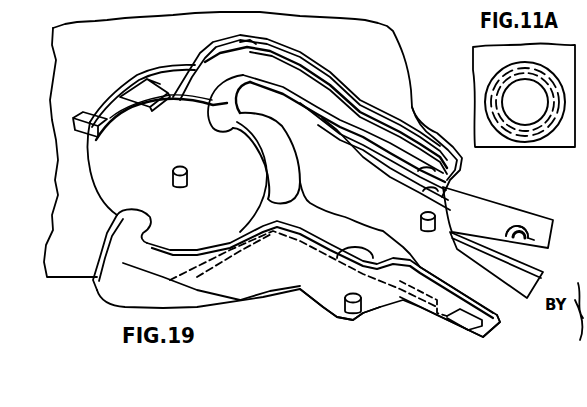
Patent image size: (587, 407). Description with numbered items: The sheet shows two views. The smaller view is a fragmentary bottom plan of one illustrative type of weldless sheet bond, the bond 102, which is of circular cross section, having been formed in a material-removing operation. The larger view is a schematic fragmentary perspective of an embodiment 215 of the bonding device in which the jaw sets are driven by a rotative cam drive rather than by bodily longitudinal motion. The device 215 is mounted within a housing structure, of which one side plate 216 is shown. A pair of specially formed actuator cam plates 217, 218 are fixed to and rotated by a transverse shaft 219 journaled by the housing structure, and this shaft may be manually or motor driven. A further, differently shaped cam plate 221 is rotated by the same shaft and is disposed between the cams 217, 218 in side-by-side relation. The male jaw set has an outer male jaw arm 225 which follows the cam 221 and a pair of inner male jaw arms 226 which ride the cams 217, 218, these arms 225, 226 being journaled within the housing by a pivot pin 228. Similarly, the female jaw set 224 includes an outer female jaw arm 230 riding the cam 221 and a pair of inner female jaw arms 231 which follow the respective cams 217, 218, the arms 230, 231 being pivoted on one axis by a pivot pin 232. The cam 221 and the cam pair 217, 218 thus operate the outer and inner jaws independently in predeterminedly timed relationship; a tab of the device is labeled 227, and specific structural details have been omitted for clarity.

In FIG. 19, the embodiment of the bonding device 215 is at (72, 301).
In FIG. 19, the side plate 216 is at (397, 78).
In FIG. 19, the actuator cam plate 217 is at (110, 112).
In FIG. 19, the actuator cam plate 218 is at (147, 69).
In FIG. 19, the transverse shaft 219 is at (177, 165).
In FIG. 19, the cam plate 221 is at (72, 115).
In FIG. 19, the female jaw set 224 is at (498, 328).
In FIG. 19, the outer male jaw arm 225 is at (317, 93).
In FIG. 19, the inner male jaw arms 226 is at (293, 108).
In FIG. 19, the notch 227 is at (556, 238).
In FIG. 19, the pivot pin 228 is at (434, 212).
In FIG. 19, the outer female jaw arm 230 is at (240, 298).
In FIG. 19, the inner female jaw arms 231 is at (327, 306).
In FIG. 19, the pivot pin 232 is at (357, 313).
In FIG. 11A, the bond 102 is at (553, 130).